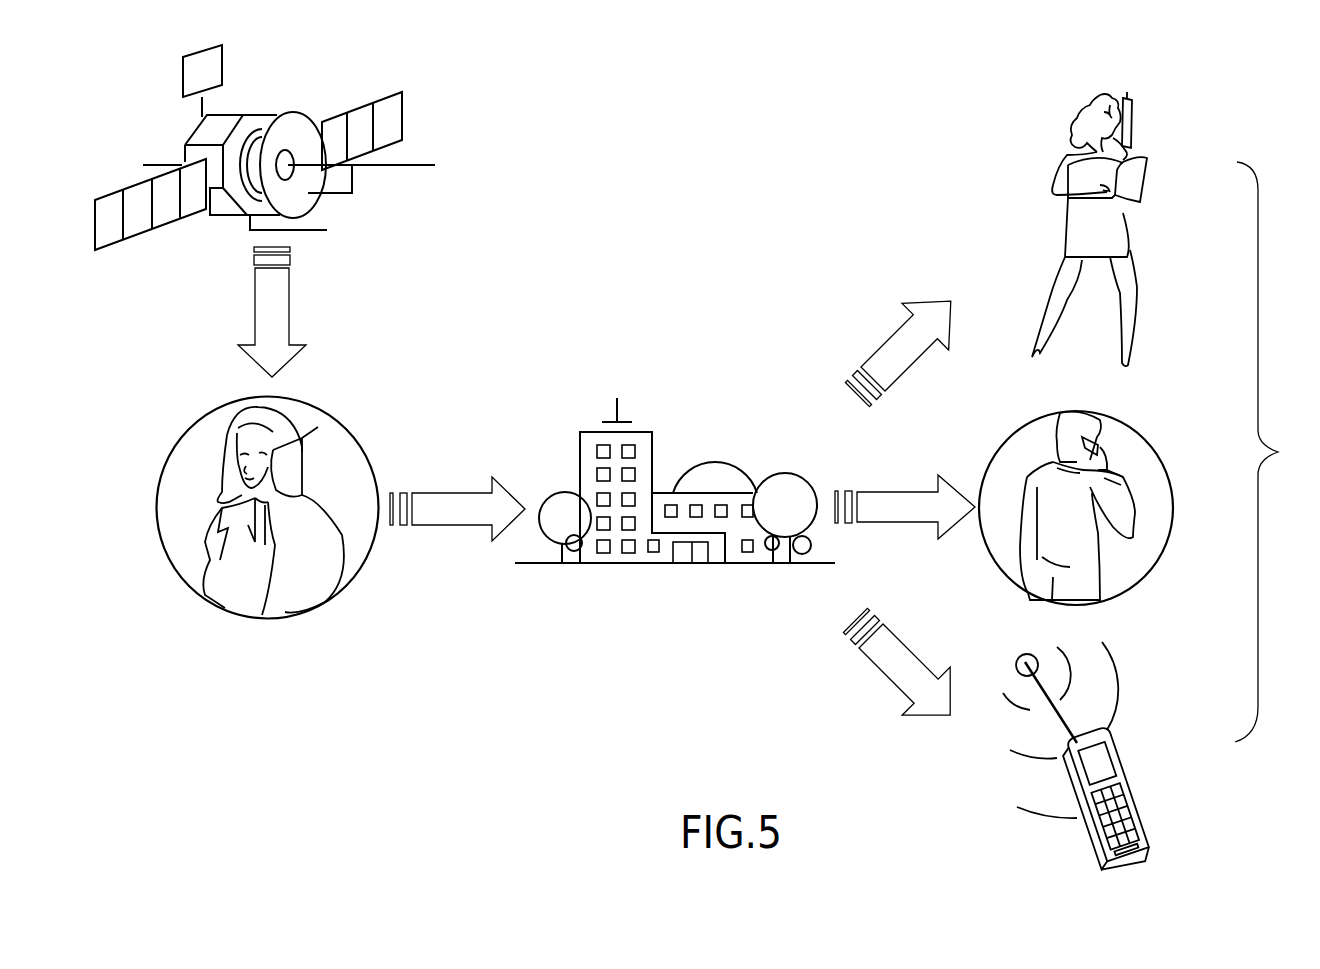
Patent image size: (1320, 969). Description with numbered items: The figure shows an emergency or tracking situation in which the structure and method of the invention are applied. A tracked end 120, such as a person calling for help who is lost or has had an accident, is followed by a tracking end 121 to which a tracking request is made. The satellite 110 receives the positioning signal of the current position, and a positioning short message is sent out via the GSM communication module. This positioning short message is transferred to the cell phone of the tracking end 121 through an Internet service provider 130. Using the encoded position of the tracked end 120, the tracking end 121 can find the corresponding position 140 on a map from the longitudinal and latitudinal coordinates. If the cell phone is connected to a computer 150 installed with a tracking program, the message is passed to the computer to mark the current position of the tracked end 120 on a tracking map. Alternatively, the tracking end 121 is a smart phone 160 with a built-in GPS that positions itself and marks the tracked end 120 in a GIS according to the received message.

The satellite 110 is at (160, 165).
The tracked end 120 is at (165, 470).
The tracking end 121 is at (1277, 452).
The Internet service provider (ISP) 130 is at (580, 447).
The corresponding position 140 is at (1133, 260).
The computer 150 is at (1152, 447).
The smart phone 160 is at (1133, 795).